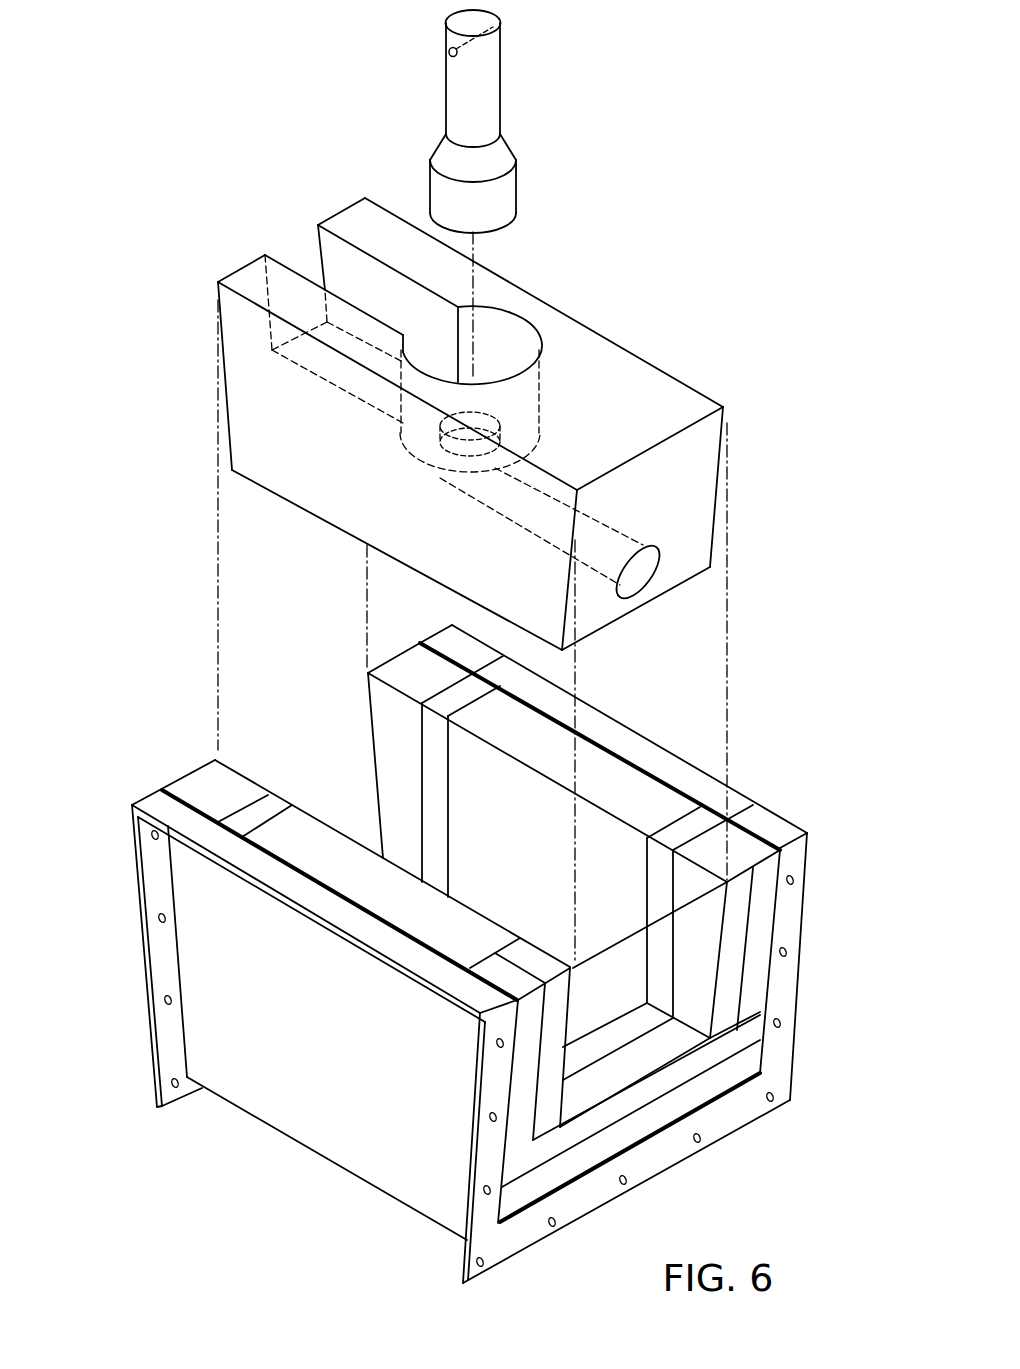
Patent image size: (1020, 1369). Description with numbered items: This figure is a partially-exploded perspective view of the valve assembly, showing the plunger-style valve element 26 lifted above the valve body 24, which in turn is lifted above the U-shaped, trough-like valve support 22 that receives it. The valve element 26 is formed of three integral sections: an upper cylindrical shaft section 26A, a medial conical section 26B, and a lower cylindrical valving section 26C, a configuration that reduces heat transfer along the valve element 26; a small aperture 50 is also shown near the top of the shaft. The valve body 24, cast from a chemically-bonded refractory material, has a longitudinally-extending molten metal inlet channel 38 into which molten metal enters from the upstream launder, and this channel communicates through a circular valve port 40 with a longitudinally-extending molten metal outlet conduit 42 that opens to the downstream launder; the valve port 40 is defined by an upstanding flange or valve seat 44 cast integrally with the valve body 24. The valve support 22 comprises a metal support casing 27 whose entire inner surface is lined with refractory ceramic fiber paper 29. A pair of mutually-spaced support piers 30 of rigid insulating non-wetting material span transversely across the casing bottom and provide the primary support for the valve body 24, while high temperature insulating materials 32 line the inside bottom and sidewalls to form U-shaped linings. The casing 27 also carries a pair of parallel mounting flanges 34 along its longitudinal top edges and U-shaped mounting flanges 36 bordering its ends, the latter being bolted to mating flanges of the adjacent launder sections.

The valve support 22 is at (751, 771).
The valve body 24 is at (677, 388).
The valve element 26 is at (524, 108).
The upper cylindrical shaft section 26A is at (492, 65).
The medial conical section 26B is at (440, 150).
The lower cylindrical valving section 26C is at (512, 205).
The support casing 27 is at (343, 1109).
The refractory ceramic fiber paper 29 is at (620, 757).
The support piers 30 is at (428, 773).
The insulating materials 32 is at (420, 655).
The mounting flanges 34 is at (307, 893).
The U-shaped mounting flanges 36 is at (153, 953).
The molten metal inlet channel 38 is at (275, 230).
The valve port 40 is at (449, 417).
The molten metal outlet conduit 42 is at (552, 545).
The valve seat 44 is at (500, 437).
The aperture 50 is at (450, 50).